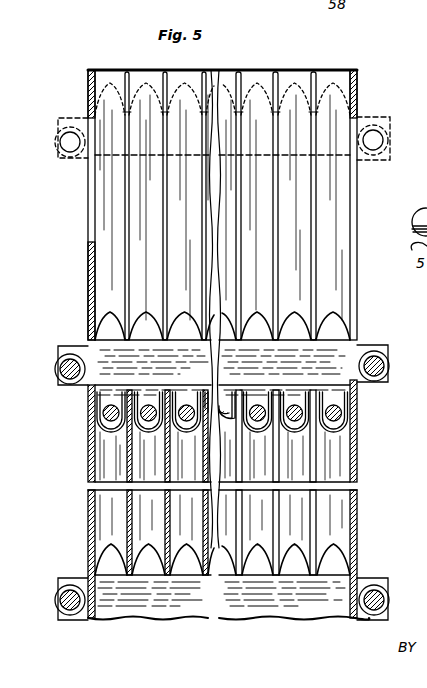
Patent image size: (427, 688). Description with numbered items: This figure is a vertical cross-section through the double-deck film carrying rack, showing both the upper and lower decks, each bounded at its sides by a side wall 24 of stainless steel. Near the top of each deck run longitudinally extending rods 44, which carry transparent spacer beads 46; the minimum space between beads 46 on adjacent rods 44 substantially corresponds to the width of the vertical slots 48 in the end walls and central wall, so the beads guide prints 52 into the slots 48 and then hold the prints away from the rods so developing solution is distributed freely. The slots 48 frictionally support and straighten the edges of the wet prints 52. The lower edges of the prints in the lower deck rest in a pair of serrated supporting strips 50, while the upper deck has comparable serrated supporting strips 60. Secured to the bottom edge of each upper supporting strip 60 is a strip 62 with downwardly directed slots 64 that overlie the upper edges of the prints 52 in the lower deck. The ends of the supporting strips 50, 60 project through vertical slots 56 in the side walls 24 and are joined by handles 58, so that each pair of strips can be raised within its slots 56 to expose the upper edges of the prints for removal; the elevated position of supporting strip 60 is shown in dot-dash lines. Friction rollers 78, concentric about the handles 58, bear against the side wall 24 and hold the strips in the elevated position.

The side wall 24 is at (90, 277).
The rod 44 is at (98, 426).
The spacer bead 46 is at (178, 410).
The slot 48 is at (162, 247).
The supporting strip 50 is at (152, 600).
The print 52 is at (127, 441).
The vertical slot 56 is at (90, 190).
The handle 58 is at (56, 136).
The supporting strip 60 is at (95, 116).
The strip 62 is at (357, 171).
The downwardly directed slot 64 is at (265, 366).
The friction roller 78 is at (58, 148).